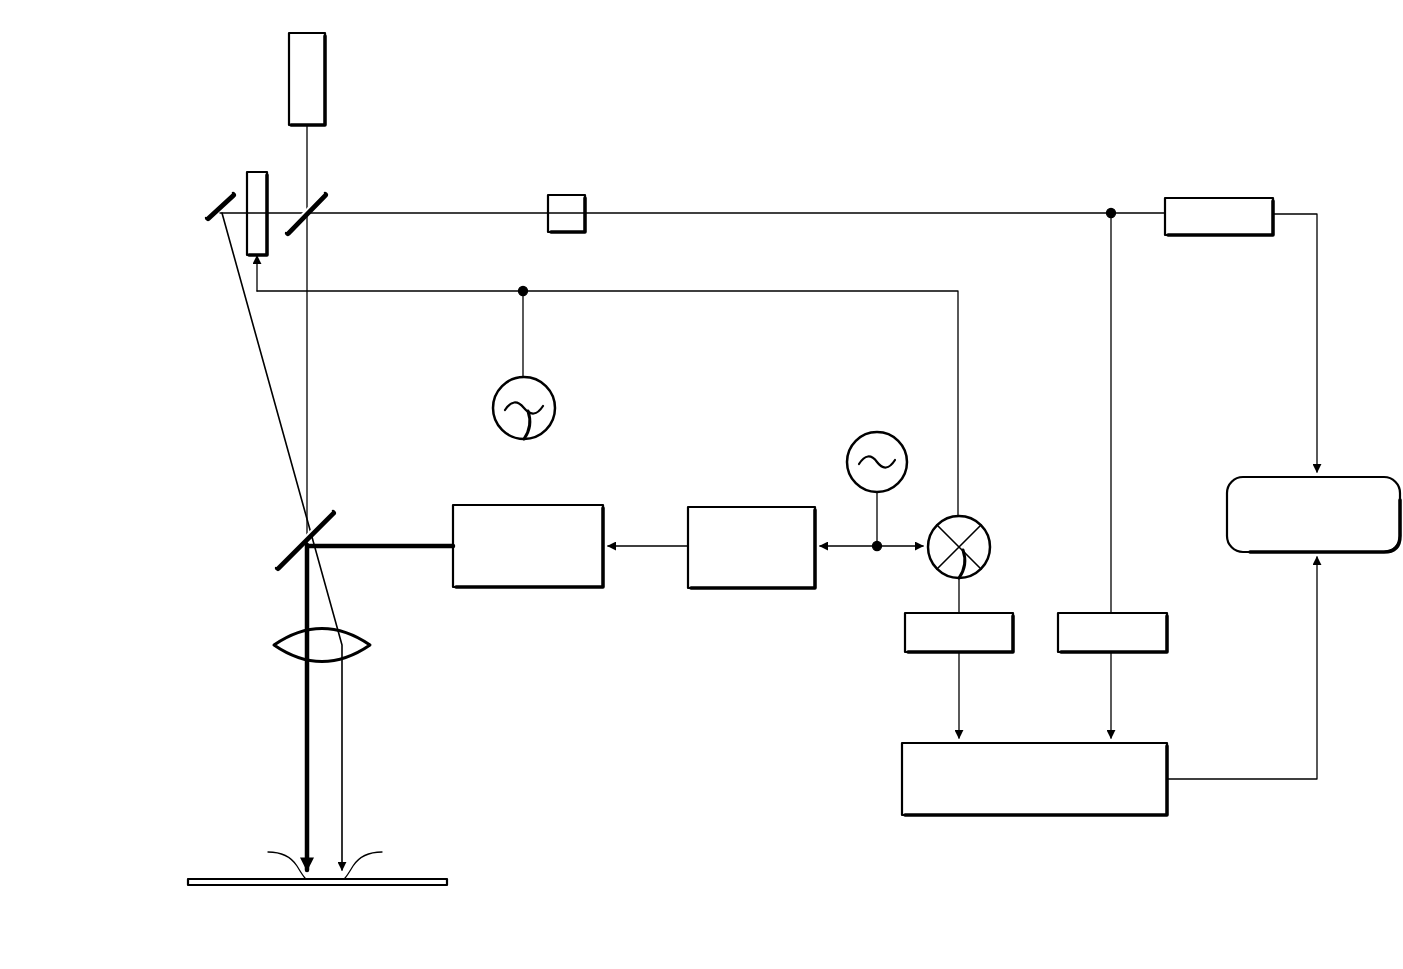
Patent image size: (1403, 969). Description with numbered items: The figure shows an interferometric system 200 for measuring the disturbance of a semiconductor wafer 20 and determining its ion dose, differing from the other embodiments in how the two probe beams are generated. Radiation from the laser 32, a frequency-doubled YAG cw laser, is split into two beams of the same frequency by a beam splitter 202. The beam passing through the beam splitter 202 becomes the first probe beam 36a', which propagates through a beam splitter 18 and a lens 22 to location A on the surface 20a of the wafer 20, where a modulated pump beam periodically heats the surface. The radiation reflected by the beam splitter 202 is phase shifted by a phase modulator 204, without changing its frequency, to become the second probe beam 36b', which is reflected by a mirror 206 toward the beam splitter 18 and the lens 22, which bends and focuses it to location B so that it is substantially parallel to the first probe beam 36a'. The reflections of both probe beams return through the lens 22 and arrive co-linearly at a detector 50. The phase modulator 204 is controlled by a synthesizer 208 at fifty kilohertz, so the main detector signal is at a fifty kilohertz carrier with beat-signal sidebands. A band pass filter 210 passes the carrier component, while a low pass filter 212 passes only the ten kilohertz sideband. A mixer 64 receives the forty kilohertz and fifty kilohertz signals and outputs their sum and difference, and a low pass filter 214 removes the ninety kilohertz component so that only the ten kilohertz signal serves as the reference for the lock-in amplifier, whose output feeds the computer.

The interferometric system 200 is at (125, 158).
The laser 32 is at (289, 80).
The phase modulator 204 is at (257, 172).
The mirror 206 is at (212, 213).
The beam splitter 202 is at (320, 207).
The detector 50 is at (585, 204).
The synthesizer 208 is at (515, 383).
The first probe beam 36a' is at (353, 335).
The second probe beam 36b' is at (255, 541).
The beam splitter 18 is at (292, 552).
The lens 22 is at (293, 640).
The semiconductor wafer 20 is at (207, 862).
The surface 20a is at (403, 879).
The mixer 64 is at (977, 525).
The band pass filter 210 is at (1217, 198).
The low pass filter 214 is at (990, 613).
The low pass filter 212 is at (1144, 613).